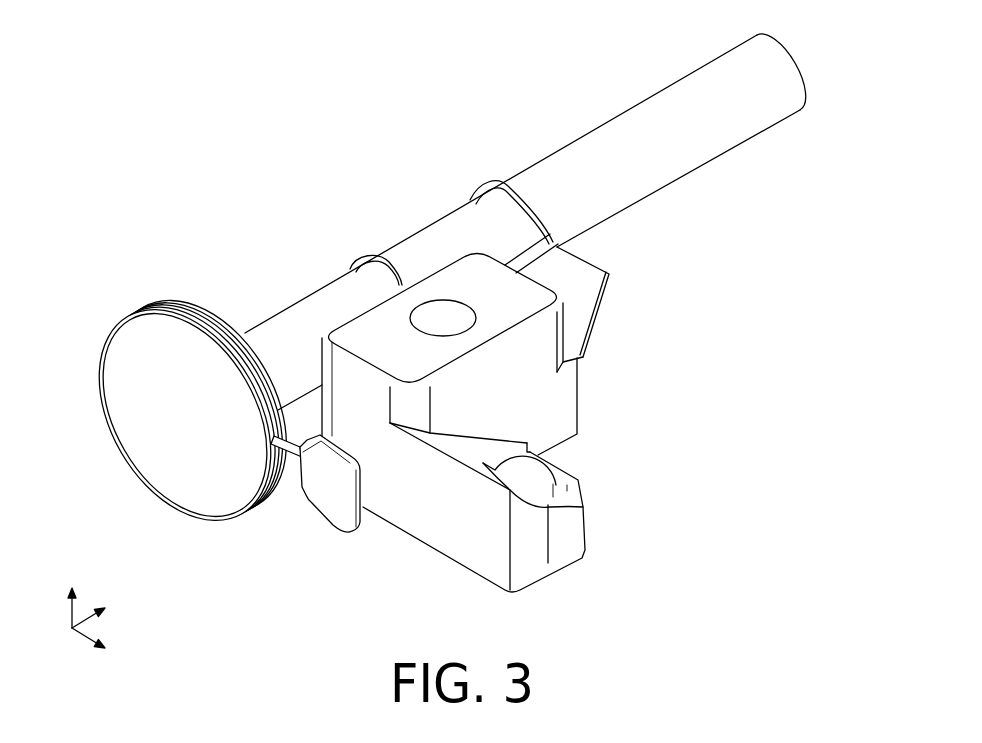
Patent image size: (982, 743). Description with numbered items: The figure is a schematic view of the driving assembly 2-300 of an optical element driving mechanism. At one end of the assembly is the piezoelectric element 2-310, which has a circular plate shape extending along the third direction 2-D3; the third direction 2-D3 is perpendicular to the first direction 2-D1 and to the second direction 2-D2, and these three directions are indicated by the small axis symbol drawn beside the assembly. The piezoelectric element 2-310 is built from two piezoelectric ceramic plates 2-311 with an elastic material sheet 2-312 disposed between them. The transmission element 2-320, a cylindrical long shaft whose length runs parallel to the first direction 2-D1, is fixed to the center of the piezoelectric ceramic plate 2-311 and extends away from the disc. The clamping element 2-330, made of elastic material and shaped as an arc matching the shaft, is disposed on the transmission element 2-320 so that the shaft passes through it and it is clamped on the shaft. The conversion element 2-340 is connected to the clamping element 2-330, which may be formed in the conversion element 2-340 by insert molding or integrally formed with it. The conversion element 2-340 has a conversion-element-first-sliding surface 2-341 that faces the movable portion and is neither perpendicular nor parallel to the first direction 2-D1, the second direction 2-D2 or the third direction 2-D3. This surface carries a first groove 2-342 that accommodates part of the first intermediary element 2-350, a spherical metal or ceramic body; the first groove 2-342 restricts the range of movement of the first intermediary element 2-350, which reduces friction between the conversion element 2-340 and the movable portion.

The driving assembly 2-300 is at (422, 335).
The piezoelectric element 2-310 is at (180, 348).
The piezoelectric ceramic plate 2-311 is at (320, 190).
The elastic material sheet 2-312 is at (220, 325).
The transmission element 2-320 is at (638, 127).
The clamping element 2-330 is at (460, 218).
The conversion element 2-340 is at (526, 413).
The conversion-element-first-sliding surface 2-341 is at (470, 450).
The first groove 2-342 is at (490, 463).
The first intermediary element 2-350 is at (533, 473).
The first direction 2-D1 is at (124, 610).
The second direction 2-D2 is at (70, 590).
The third direction 2-D3 is at (124, 649).